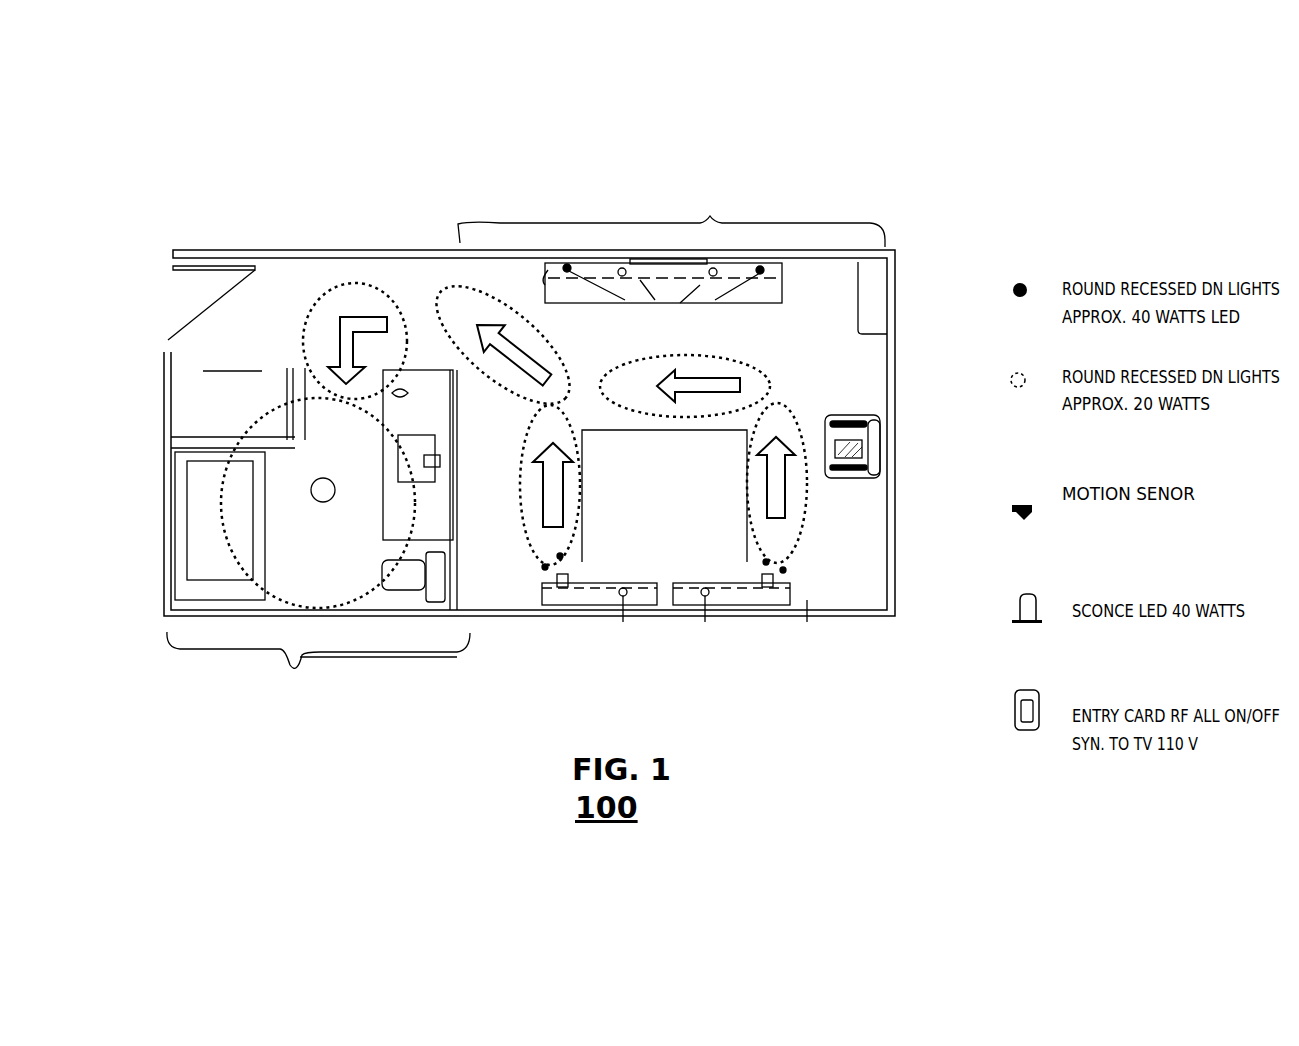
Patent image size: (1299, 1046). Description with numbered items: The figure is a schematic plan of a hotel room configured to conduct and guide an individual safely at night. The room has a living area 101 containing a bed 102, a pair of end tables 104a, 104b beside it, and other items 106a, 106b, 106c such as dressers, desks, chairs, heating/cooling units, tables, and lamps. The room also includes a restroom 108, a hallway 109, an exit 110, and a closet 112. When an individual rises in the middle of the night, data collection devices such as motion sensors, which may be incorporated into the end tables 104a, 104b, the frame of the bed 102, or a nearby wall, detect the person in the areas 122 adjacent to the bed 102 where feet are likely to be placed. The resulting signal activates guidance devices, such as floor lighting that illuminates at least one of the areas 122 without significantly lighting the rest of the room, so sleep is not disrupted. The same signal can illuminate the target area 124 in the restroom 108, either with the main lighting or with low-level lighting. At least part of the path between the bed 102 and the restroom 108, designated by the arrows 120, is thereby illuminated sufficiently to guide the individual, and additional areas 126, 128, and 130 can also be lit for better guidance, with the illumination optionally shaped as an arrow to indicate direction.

The living area 101 is at (671, 208).
The bed 102 is at (664, 496).
The end table 104a is at (542, 598).
The end table 104b is at (754, 619).
The other item 106a is at (545, 282).
The other item 106b is at (852, 417).
The other item 106c is at (880, 288).
The restroom 108 is at (318, 680).
The hallway 109 is at (152, 250).
The exit 110 is at (180, 303).
The closet 112 is at (193, 408).
The arrows 120 is at (550, 477).
The areas 122 is at (533, 553).
The area 124 is at (253, 577).
The area 126 is at (485, 323).
The area 128 is at (750, 367).
The area 130 is at (317, 300).